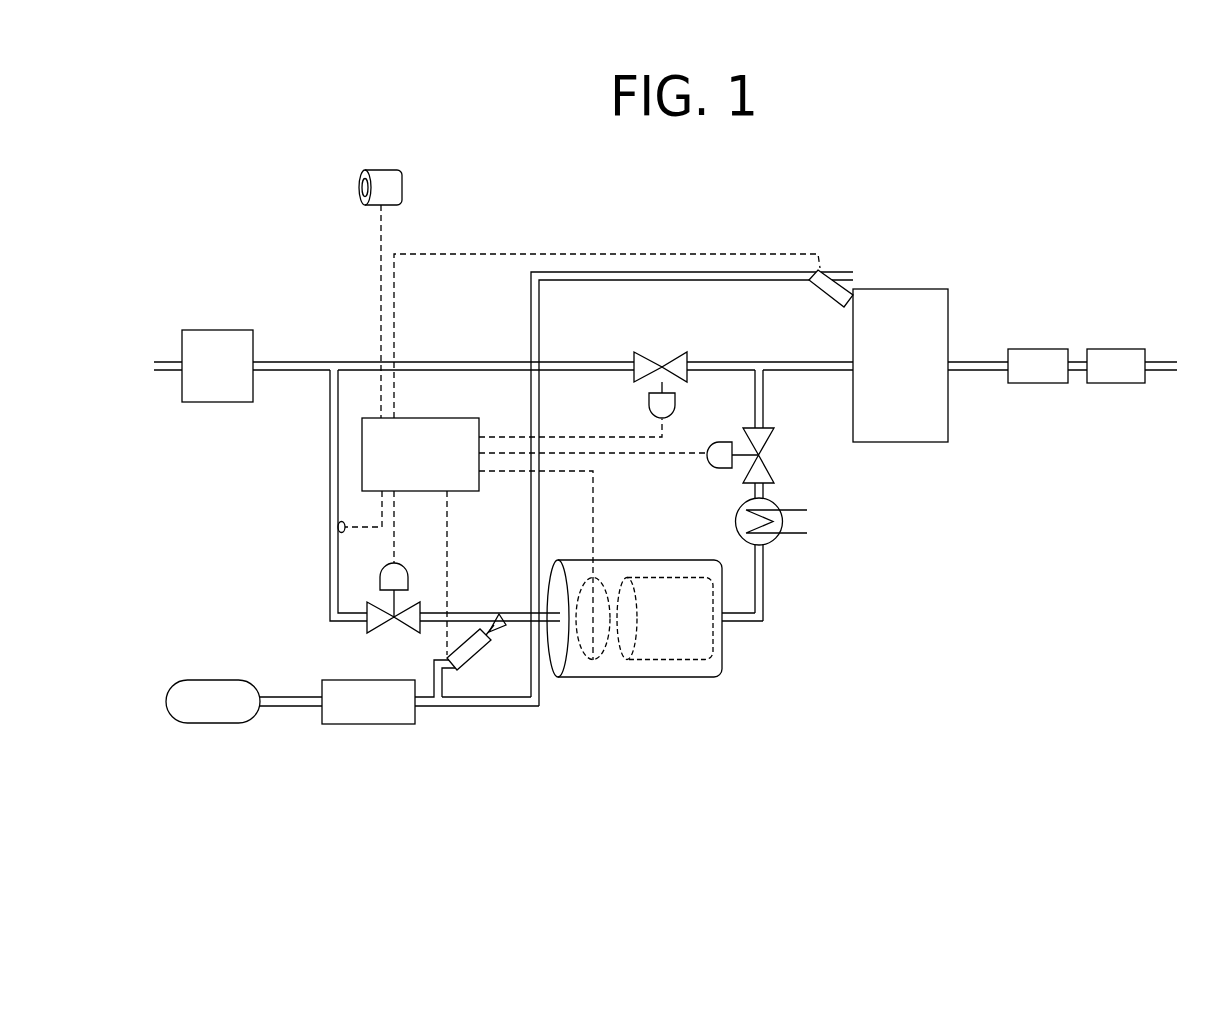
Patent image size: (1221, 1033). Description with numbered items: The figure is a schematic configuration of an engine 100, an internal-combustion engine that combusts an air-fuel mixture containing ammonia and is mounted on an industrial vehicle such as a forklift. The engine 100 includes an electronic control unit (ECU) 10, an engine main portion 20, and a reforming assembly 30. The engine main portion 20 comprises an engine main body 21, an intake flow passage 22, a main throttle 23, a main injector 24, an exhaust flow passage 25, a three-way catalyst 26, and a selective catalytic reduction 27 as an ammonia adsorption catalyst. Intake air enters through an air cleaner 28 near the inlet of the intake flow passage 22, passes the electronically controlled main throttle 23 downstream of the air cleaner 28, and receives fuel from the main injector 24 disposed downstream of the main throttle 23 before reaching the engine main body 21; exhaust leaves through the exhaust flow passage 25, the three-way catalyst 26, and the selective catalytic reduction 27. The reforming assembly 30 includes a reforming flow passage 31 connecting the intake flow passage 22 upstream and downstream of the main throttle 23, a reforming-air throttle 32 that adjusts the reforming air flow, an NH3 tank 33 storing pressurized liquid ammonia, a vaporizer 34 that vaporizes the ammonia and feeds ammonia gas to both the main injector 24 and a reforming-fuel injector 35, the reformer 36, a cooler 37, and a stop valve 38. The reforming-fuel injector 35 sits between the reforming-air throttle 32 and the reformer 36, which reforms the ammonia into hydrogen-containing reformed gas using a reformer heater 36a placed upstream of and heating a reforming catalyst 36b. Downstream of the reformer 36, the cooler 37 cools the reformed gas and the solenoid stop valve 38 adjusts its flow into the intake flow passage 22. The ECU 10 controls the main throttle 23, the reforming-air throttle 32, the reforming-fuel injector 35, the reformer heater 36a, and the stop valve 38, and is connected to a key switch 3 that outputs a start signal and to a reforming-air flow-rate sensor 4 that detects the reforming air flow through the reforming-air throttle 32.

The engine 100 is at (1053, 177).
The key switch 3 is at (381, 170).
The reforming-air flow-rate sensor 4 is at (344, 534).
The electronic control unit 10 is at (467, 492).
The engine main portion 20 is at (653, 236).
The engine main body 21 is at (922, 288).
The intake flow passage 22 is at (578, 361).
The main throttle 23 is at (690, 357).
The main injector 24 is at (830, 276).
The exhaust flow passage 25 is at (975, 361).
The three-way catalyst 26 is at (1050, 384).
The selective catalytic reduction 27 is at (1128, 384).
The air cleaner 28 is at (203, 329).
The reforming assembly 30 is at (436, 774).
The reforming flow passage 31 is at (330, 546).
The reforming-air throttle 32 is at (413, 601).
The NH3 tank 33 is at (230, 724).
The vaporizer 34 is at (388, 725).
The reforming-fuel injector 35 is at (475, 655).
The reformer 36 is at (723, 650).
The reformer heater 36a is at (593, 678).
The reforming catalyst 36b is at (676, 678).
The cooler 37 is at (776, 540).
The stop valve 38 is at (775, 461).